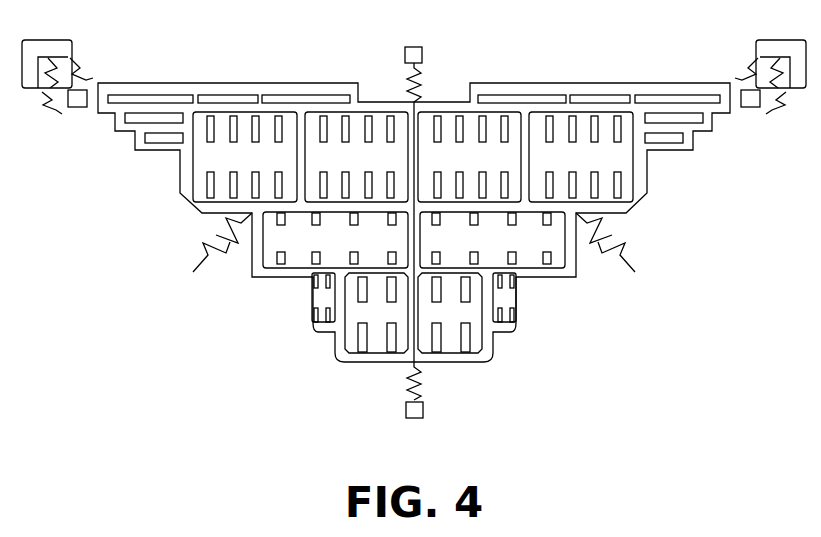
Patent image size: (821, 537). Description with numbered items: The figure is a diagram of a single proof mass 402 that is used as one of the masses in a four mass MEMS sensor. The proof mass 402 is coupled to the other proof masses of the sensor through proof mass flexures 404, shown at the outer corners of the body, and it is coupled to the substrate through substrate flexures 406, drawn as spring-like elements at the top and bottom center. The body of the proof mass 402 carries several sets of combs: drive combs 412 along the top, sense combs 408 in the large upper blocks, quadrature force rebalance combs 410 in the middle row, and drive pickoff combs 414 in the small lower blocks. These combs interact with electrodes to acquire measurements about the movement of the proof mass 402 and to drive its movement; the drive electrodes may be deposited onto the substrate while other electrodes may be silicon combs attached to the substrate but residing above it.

The proof mass 402 is at (575, 273).
The proof mass flexures 404 is at (90, 80).
The substrate flexures 406 is at (407, 73).
The sense combs 408 is at (253, 127).
The quadrature force rebalance combs 410 is at (278, 258).
The drive combs 412 is at (520, 82).
The drive pickoff combs 414 is at (317, 315).